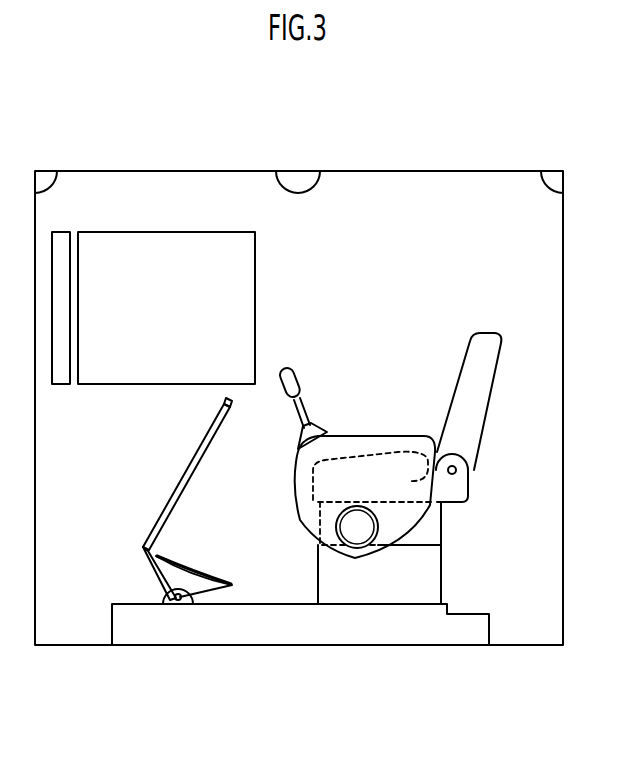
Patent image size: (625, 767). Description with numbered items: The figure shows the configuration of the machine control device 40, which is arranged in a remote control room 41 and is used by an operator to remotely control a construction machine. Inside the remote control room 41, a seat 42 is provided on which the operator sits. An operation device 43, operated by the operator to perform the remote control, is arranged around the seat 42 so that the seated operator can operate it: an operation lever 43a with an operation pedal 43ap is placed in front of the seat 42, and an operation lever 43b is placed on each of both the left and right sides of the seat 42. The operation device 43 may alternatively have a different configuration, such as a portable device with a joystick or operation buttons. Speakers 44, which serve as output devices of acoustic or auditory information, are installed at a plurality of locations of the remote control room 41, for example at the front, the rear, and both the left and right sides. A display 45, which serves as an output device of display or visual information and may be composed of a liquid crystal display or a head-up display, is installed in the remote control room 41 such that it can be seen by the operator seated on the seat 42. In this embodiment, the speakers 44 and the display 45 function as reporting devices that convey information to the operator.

The machine control device 40 is at (397, 143).
The remote control room 41 is at (427, 171).
The seat 42 is at (465, 351).
The operation device 43 is at (322, 389).
The operation lever 43a is at (184, 470).
The operation pedal 43ap is at (203, 578).
The operation lever 43b is at (291, 371).
The speakers 44 is at (44, 178).
The display 45 is at (62, 232).